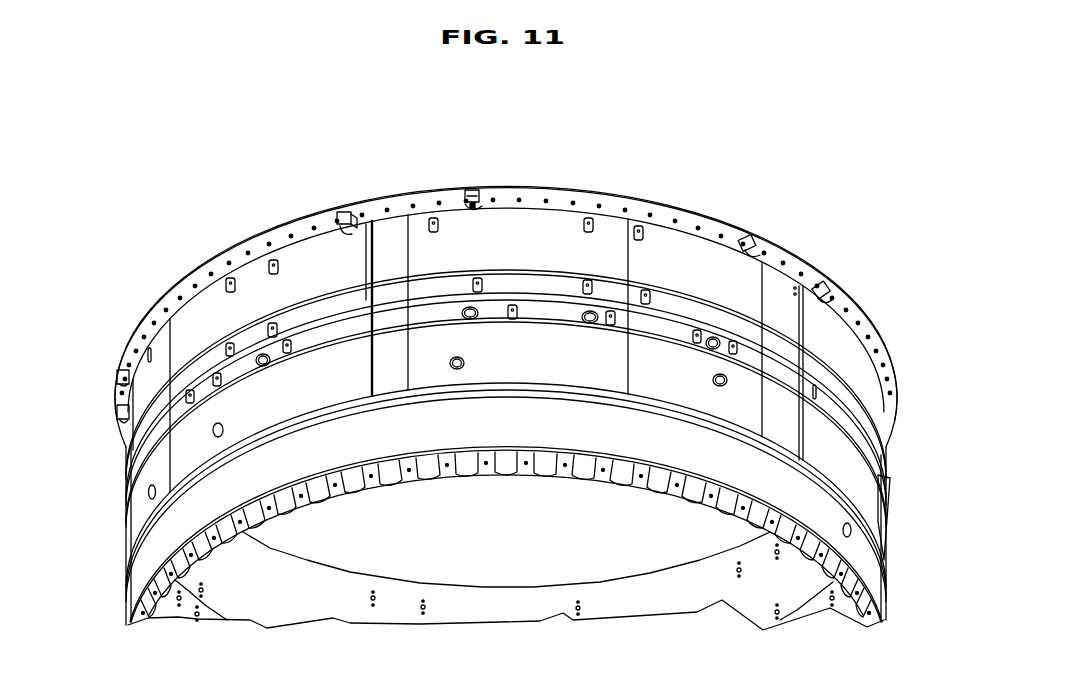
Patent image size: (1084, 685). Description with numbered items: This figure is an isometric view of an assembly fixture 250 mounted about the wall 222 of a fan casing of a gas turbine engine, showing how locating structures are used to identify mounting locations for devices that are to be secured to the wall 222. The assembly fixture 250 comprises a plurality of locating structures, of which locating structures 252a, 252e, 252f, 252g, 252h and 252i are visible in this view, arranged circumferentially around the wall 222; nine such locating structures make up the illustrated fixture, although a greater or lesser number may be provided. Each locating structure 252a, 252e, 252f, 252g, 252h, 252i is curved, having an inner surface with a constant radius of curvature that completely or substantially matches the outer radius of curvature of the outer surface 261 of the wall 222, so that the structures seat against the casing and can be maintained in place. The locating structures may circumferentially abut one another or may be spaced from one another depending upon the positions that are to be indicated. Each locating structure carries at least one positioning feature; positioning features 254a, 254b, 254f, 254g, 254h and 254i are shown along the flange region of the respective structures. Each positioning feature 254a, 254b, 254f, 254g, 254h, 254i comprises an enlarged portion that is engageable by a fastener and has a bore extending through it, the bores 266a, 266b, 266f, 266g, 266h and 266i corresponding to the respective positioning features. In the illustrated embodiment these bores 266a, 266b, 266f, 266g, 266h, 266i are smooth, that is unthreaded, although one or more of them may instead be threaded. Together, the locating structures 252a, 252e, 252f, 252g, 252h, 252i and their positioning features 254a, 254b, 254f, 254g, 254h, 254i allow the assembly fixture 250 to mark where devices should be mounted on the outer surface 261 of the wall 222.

The assembly fixture 250 is at (742, 121).
The wall 222 is at (148, 552).
The locating structure 252a is at (142, 365).
The locating structure 252e is at (892, 480).
The locating structure 252f is at (845, 335).
The locating structure 252g is at (665, 238).
The locating structure 252h is at (557, 220).
The locating structure 252i is at (197, 312).
The positioning feature 254a is at (122, 362).
The positioning feature 254b is at (118, 424).
The positioning feature 254f is at (826, 285).
The positioning feature 254g is at (748, 238).
The positioning feature 254h is at (468, 192).
The positioning feature 254i is at (345, 210).
The bore 266a is at (120, 378).
The bore 266b is at (122, 432).
The bore 266f is at (835, 292).
The bore 266g is at (762, 256).
The bore 266h is at (490, 210).
The bore 266i is at (366, 226).
The outer surface 261 is at (877, 580).